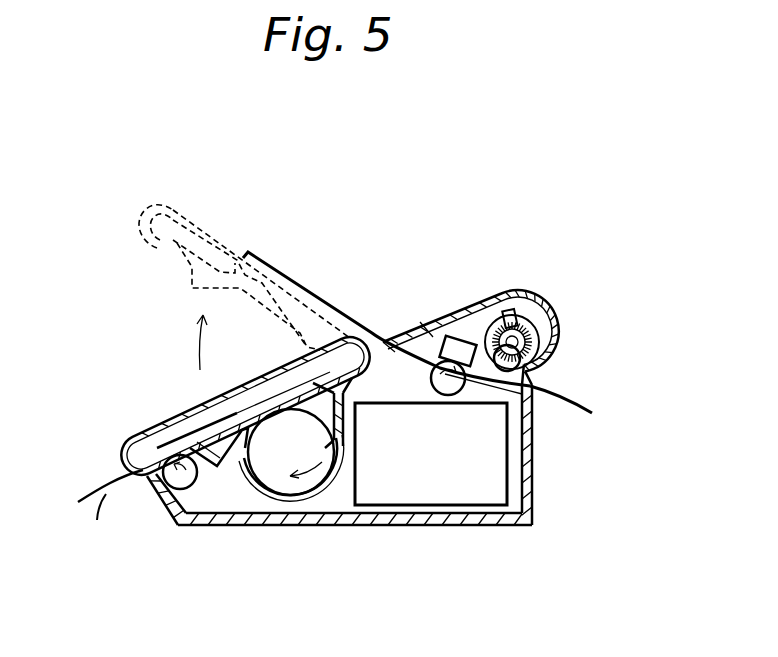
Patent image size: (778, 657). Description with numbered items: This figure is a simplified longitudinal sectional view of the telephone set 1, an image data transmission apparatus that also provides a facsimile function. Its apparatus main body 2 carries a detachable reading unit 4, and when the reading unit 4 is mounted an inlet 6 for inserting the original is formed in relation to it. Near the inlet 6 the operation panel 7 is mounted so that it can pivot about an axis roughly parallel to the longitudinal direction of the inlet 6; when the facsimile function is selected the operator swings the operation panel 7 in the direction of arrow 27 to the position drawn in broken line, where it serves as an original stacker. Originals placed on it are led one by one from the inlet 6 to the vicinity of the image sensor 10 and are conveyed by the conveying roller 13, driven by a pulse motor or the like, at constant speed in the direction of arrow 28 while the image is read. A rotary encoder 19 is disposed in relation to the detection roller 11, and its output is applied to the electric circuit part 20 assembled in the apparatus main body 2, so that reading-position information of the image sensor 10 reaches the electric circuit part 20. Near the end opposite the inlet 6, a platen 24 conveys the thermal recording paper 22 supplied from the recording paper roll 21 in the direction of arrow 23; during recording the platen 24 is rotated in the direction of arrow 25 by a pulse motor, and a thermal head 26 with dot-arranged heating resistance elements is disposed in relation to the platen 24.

The telephone set 1 is at (583, 131).
The apparatus main body 2 is at (488, 523).
The reading unit 4 is at (508, 290).
The inlet 6 is at (402, 337).
The operation panel 7 is at (200, 230).
The image sensor 10 is at (458, 348).
The detection roller 11 is at (543, 352).
The conveying roller 13 is at (410, 355).
The rotary encoder 19 is at (530, 320).
The electric circuit part 20 is at (425, 487).
The recording paper roll 21 is at (283, 457).
The thermal recording paper 22 is at (97, 521).
The arrow 23 is at (97, 491).
The platen 24 is at (195, 478).
The arrow 25 is at (190, 472).
The thermal head 26 is at (163, 455).
The arrow 27 is at (196, 338).
The arrow 28 is at (591, 391).